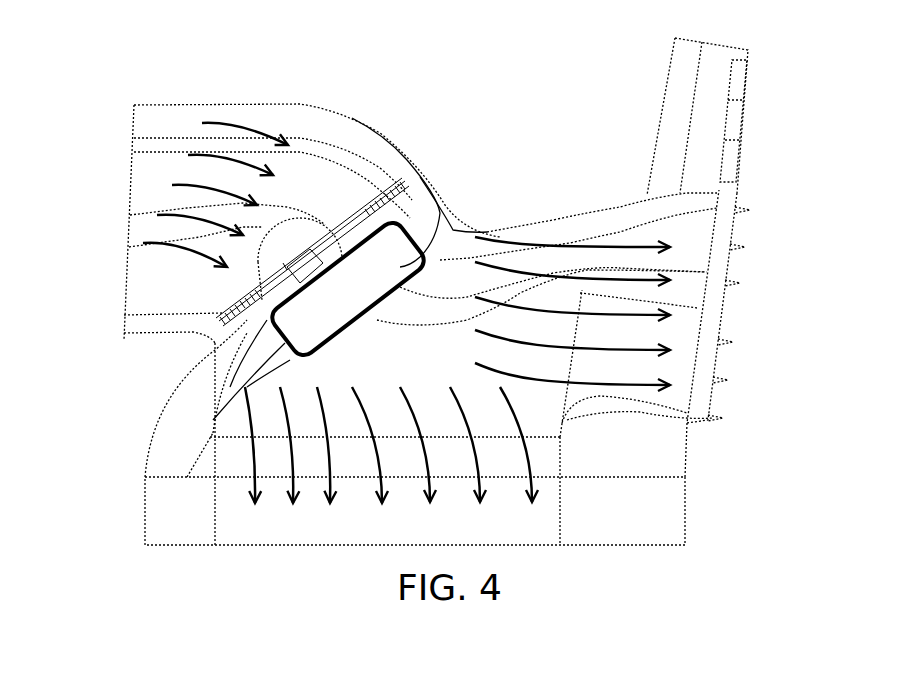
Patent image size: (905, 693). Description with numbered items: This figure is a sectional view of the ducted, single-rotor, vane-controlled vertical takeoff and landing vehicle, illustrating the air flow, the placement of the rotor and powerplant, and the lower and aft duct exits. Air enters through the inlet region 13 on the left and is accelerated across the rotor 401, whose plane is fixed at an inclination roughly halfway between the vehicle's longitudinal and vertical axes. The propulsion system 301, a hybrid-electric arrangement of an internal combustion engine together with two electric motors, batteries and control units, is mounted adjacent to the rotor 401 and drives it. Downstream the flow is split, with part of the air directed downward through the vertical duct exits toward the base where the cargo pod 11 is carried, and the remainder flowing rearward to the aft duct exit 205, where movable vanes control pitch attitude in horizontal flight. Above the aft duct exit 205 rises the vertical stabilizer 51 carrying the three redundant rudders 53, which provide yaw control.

The cargo pod 11 is at (160, 520).
The air inlet duct 13 is at (158, 272).
The vertical stabilizer 51 is at (675, 122).
The rudders 53 is at (730, 158).
The aft duct exit 205 is at (750, 360).
The propulsion system 301 is at (400, 247).
The rotor 401 is at (237, 283).